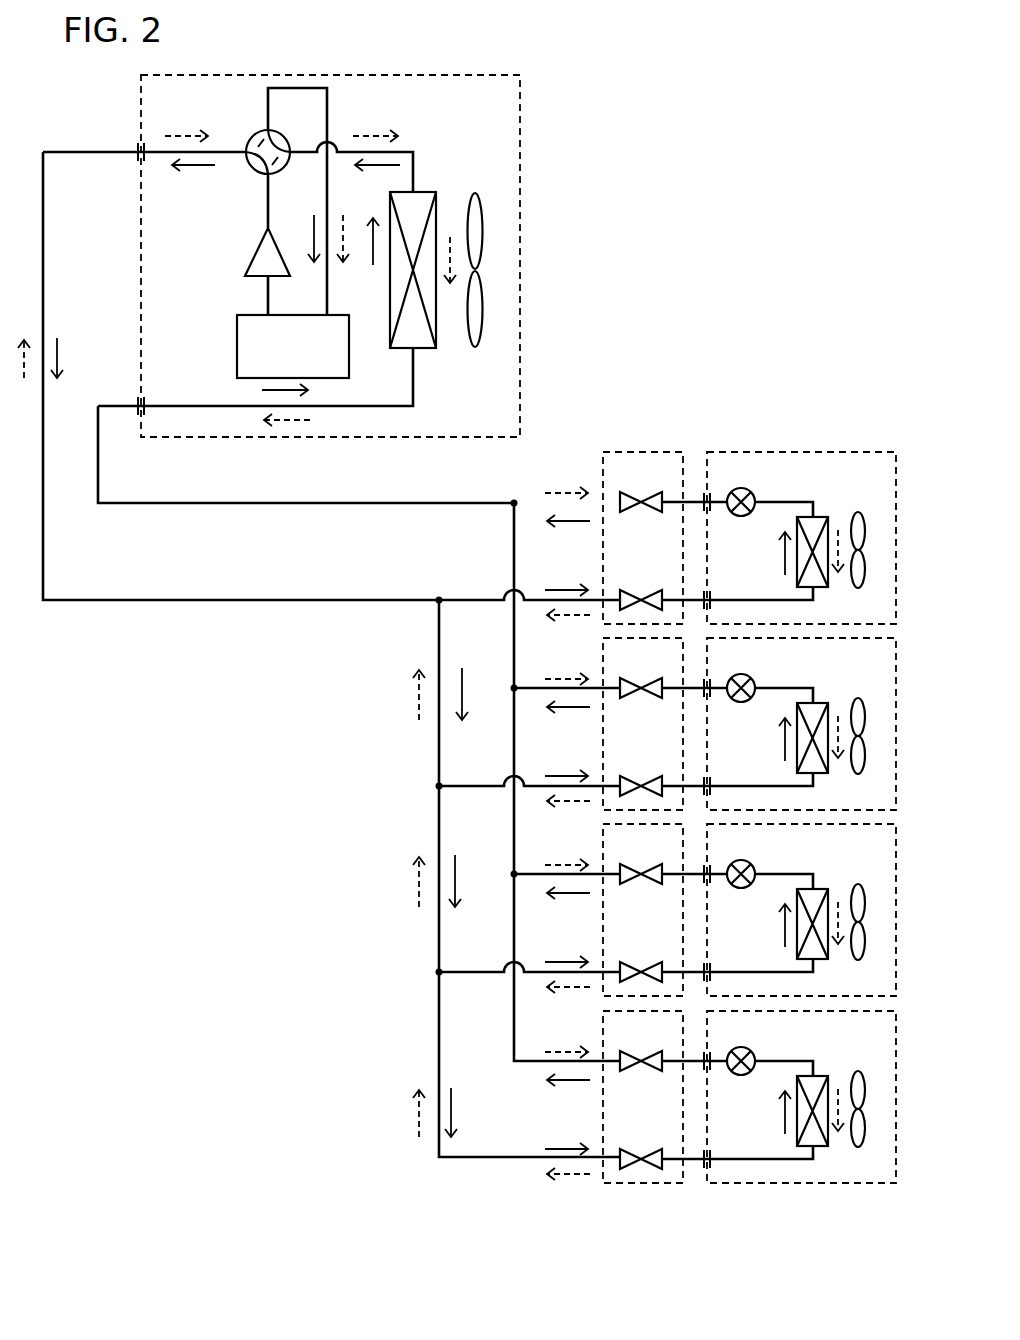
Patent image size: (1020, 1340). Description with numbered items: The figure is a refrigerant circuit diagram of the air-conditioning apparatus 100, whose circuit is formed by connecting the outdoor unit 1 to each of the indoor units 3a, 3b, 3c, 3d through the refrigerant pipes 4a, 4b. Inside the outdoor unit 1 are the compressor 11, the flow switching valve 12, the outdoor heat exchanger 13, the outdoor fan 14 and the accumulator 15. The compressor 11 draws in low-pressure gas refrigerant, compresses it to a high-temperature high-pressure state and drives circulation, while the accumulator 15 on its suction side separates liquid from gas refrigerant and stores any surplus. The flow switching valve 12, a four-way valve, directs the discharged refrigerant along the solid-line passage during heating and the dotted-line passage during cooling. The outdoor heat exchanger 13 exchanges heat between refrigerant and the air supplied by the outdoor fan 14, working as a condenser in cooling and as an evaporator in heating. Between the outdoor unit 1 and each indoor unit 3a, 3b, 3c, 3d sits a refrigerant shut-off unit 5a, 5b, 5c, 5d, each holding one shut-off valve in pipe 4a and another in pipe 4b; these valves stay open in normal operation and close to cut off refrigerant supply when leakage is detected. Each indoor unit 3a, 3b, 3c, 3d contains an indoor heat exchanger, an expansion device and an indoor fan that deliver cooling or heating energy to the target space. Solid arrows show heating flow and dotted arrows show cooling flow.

The outdoor unit 1 is at (520, 109).
The compressor 11 is at (249, 268).
The flow switching valve 12 is at (253, 137).
The outdoor heat exchanger 13 is at (436, 193).
The outdoor fan 14 is at (480, 195).
The accumulator 15 is at (349, 316).
The indoor unit 3a is at (895, 472).
The indoor unit 3b is at (819, 720).
The indoor unit 3c is at (818, 906).
The indoor unit 3d is at (819, 1093).
The refrigerant pipe 4a is at (271, 503).
The refrigerant pipe 4b is at (280, 600).
The refrigerant shut-off unit 5a is at (603, 484).
The refrigerant shut-off unit 5b is at (625, 724).
The refrigerant shut-off unit 5c is at (625, 910).
The refrigerant shut-off unit 5d is at (625, 1097).
The air-conditioning apparatus 100 is at (430, 1230).